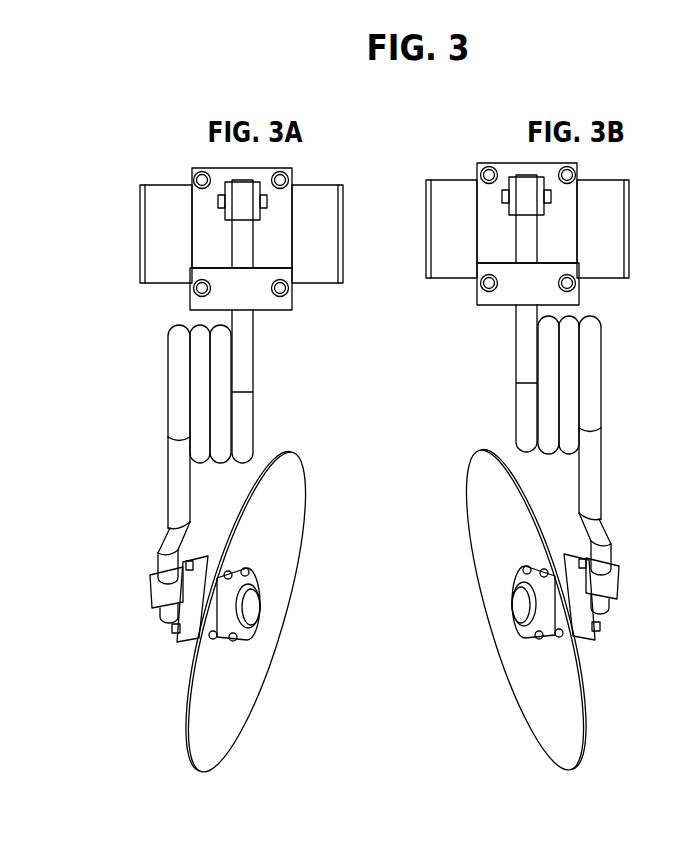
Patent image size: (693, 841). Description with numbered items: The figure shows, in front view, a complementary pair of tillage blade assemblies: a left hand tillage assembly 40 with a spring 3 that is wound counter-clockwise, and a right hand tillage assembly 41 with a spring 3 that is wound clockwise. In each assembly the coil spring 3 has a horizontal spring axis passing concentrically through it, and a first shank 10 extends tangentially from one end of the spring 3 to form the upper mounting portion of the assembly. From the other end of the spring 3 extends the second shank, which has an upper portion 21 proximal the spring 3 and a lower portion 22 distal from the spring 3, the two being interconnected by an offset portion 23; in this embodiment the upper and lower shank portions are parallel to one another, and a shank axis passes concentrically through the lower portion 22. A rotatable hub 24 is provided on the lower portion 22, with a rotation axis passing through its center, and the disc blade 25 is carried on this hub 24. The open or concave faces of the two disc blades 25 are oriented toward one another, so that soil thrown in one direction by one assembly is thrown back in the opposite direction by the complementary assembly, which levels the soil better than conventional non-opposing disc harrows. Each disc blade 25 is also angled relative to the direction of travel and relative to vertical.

In FIG. 3A, the first shank 10 is at (238, 237).
In FIG. 3B, the first shank 10 is at (523, 242).
In FIG. 3A, the coil spring 3 is at (217, 460).
In FIG. 3B, the coil spring 3 is at (547, 453).
In FIG. 3A, the upper portion 21 is at (172, 478).
In FIG. 3B, the upper portion 21 is at (590, 465).
In FIG. 3A, the offset portion 23 is at (170, 540).
In FIG. 3B, the offset portion 23 is at (597, 532).
In FIG. 3A, the rotatable hub 24 is at (152, 593).
In FIG. 3B, the rotatable hub 24 is at (603, 593).
In FIG. 3A, the lower portion 22 is at (167, 620).
In FIG. 3B, the lower portion 22 is at (608, 608).
In FIG. 3A, the disc blade 25 is at (182, 720).
In FIG. 3B, the disc blade 25 is at (587, 710).
In FIG. 3A, the left hand tillage assembly 40 is at (242, 462).
In FIG. 3B, the right hand tillage assembly 41 is at (548, 468).